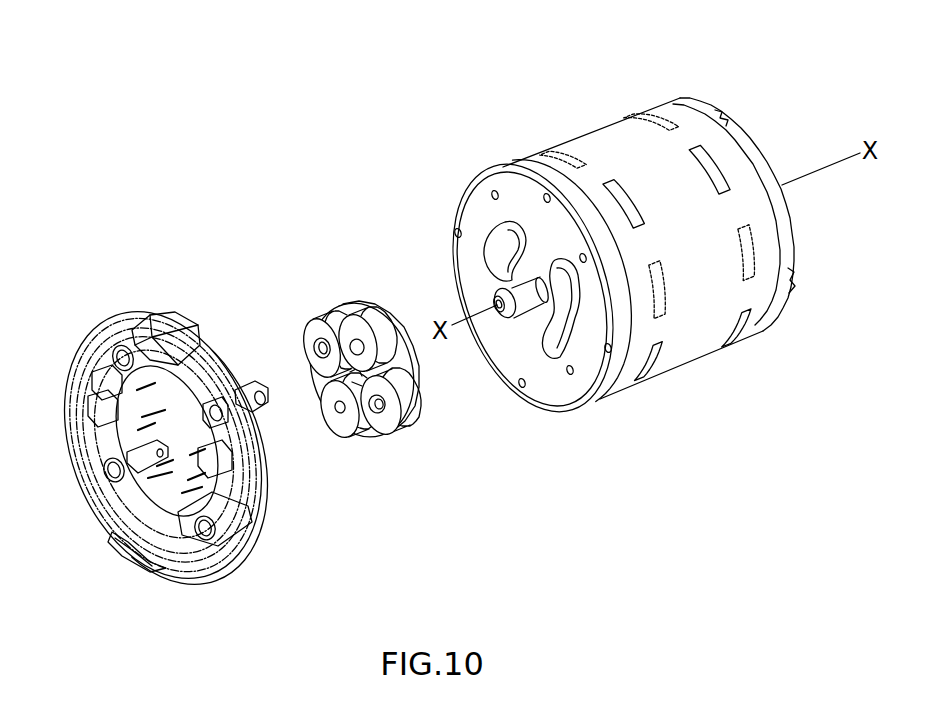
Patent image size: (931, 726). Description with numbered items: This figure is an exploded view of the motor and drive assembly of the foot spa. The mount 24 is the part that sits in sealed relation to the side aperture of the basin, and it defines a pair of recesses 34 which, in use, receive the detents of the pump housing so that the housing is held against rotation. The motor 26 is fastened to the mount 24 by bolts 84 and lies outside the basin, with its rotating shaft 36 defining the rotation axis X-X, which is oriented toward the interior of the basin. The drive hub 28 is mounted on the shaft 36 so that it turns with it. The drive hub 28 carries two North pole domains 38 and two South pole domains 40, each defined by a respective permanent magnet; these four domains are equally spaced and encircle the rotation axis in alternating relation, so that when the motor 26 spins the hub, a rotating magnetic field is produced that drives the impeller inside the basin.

The mount 24 is at (146, 196).
The motor 26 is at (555, 120).
The drive hub 28 is at (303, 258).
The recesses 34 is at (125, 300).
The rotating shaft 36 is at (518, 292).
The North pole domains 38 is at (312, 338).
The South pole domains 40 is at (353, 332).
The bolts 84 is at (133, 343).